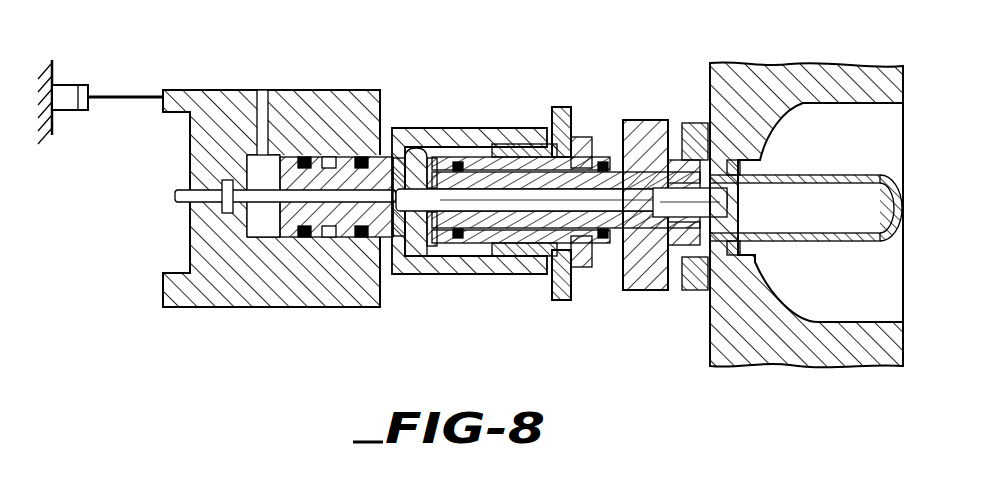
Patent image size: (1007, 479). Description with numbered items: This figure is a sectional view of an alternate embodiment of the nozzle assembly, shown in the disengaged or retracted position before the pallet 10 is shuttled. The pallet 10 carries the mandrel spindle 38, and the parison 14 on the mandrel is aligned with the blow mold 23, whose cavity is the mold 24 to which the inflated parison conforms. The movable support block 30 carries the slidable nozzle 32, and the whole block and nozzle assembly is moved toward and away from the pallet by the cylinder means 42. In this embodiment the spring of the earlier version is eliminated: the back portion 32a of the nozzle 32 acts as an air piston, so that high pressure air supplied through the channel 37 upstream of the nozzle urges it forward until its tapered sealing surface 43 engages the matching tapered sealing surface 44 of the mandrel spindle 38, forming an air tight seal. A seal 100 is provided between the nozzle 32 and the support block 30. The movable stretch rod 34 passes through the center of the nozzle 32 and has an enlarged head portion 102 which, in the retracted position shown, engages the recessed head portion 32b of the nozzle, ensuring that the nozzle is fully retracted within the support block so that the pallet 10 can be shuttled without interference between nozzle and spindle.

The pallet 10 is at (563, 107).
The parison 14 is at (845, 241).
The blow mold 23 is at (806, 185).
The mold 24 is at (832, 155).
The support block 30 is at (175, 307).
The nozzle 32 is at (322, 237).
The back portion of nozzle 32a is at (270, 172).
The recessed head portion of nozzle 32b is at (447, 128).
The stretch rod 34 is at (176, 201).
The channel 37 is at (264, 90).
The mandrel spindle 38 is at (510, 274).
The cylinder means 42 is at (66, 90).
The tapered sealing surface of nozzle 43 is at (397, 276).
The tapered sealing surface of spindle 44 is at (423, 250).
The seal 100 is at (300, 238).
The enlarged head portion of stretch rod 102 is at (399, 158).